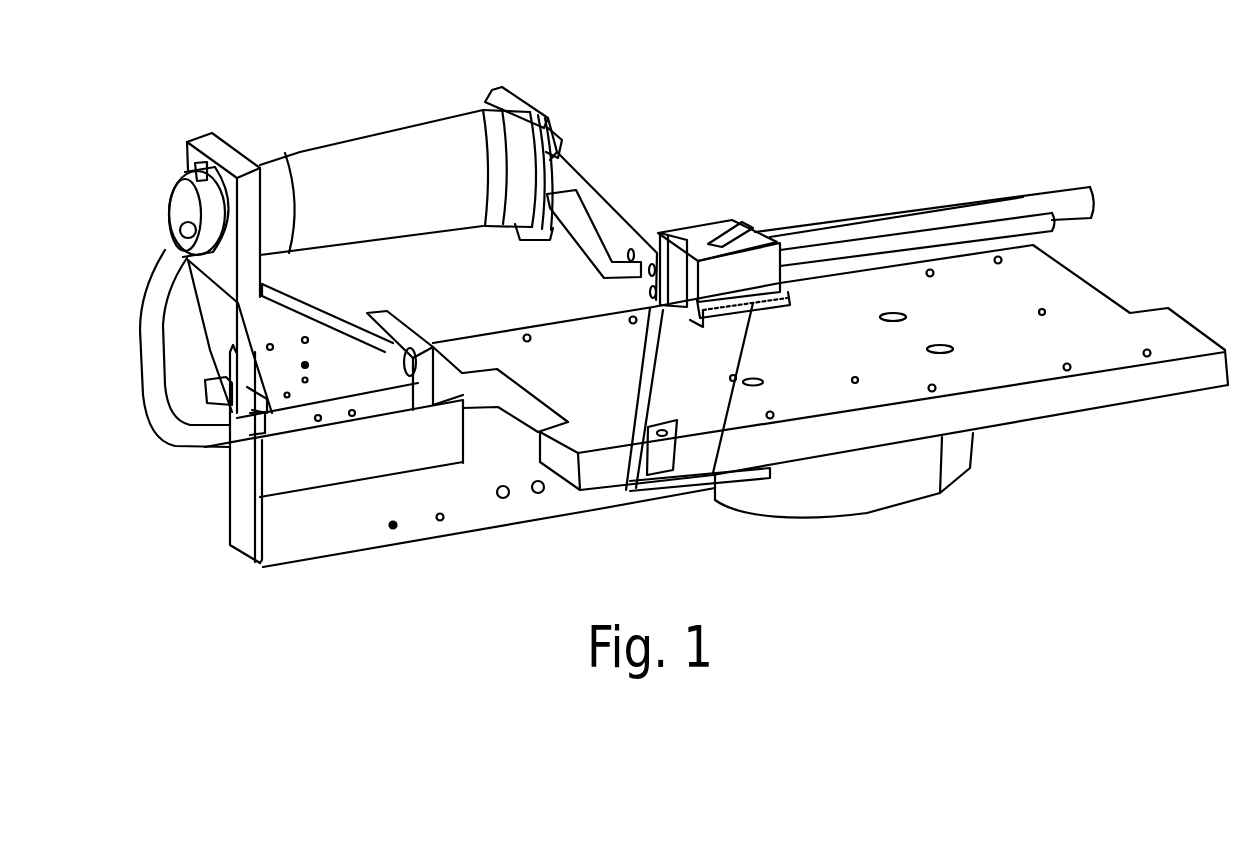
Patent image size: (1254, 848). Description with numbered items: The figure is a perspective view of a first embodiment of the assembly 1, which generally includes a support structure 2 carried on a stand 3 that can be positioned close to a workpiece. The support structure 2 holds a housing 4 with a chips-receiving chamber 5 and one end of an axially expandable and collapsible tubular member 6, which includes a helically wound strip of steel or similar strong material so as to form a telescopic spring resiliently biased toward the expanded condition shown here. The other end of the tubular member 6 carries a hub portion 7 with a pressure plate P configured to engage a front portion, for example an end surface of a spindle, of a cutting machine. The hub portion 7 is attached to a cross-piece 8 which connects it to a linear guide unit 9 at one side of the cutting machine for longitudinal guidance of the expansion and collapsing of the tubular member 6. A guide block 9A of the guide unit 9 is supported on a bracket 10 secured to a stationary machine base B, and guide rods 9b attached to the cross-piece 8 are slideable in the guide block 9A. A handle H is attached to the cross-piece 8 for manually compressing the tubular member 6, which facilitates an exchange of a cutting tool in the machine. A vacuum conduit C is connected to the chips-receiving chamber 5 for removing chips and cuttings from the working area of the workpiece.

The assembly 1 is at (553, 95).
The support structure 2 is at (273, 330).
The stand 3 is at (333, 537).
The housing 4 is at (198, 163).
The chips-receiving chamber 5 is at (183, 209).
The tubular member 6 is at (348, 137).
The hub portion 7 is at (542, 124).
The cross-piece 8 is at (590, 210).
The linear guide unit 9 is at (746, 208).
The guide block 9A is at (763, 273).
The guide rods 9b is at (866, 255).
The bracket 10 is at (674, 383).
The machine base B is at (1100, 289).
The vacuum conduit C is at (157, 363).
The handle H is at (582, 242).
The pressure plate P is at (521, 102).